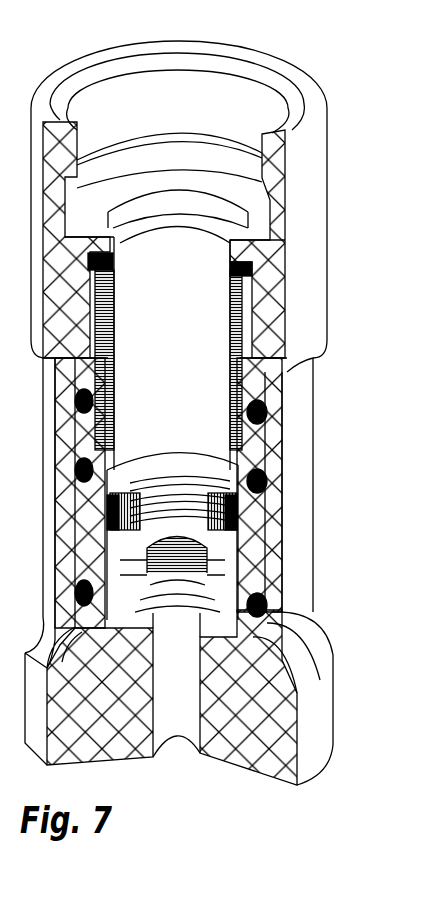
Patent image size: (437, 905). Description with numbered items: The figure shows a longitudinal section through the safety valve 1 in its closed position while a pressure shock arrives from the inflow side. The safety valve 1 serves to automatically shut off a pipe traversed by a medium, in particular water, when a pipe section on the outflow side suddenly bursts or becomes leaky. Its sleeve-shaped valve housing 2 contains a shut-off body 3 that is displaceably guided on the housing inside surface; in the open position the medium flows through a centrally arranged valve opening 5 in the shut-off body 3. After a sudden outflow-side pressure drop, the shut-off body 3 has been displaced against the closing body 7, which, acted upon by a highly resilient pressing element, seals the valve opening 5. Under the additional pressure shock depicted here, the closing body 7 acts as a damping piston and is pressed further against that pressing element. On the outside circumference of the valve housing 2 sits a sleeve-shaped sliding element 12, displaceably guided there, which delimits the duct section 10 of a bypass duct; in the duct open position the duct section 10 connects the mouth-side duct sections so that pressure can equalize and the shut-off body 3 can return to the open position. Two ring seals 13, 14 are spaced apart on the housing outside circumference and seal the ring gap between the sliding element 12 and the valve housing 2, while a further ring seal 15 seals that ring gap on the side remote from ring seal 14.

The safety valve 1 is at (321, 52).
The valve housing 2 is at (313, 184).
The shut-off body 3 is at (128, 468).
The valve opening 5 is at (163, 488).
The closing body 7 is at (187, 527).
The duct section 10 is at (284, 450).
The sliding element 12 is at (303, 398).
The ring seal 13 is at (284, 417).
The ring seal 14 is at (284, 482).
The further ring seal 15 is at (284, 604).